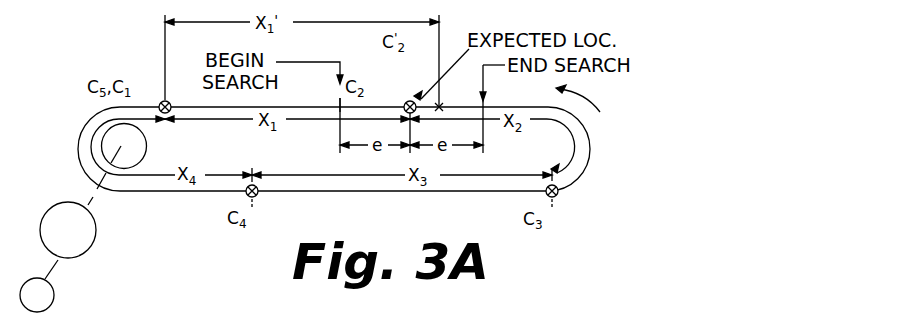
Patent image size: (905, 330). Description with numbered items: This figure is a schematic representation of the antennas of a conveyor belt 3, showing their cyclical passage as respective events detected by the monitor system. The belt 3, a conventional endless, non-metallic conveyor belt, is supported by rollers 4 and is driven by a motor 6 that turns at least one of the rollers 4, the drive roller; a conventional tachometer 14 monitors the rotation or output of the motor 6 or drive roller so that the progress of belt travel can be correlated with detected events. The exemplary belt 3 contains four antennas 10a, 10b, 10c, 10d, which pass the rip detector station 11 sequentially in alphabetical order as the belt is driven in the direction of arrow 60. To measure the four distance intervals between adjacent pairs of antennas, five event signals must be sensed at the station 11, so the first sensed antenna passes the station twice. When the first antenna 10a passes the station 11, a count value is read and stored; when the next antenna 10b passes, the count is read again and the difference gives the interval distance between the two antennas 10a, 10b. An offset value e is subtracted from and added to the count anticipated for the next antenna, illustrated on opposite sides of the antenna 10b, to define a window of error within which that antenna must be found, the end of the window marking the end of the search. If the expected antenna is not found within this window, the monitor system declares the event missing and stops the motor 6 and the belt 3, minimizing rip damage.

The conveyor belt 3 is at (590, 147).
The rollers 4 is at (131, 157).
The motor 6 is at (96, 233).
The tachometer 14 is at (54, 297).
The antenna 10a is at (163, 101).
The antenna 10b is at (409, 101).
The antenna 10c is at (557, 196).
The antenna 10d is at (256, 196).
The rip detector station 11 is at (336, 103).
The arrow 60 is at (592, 101).